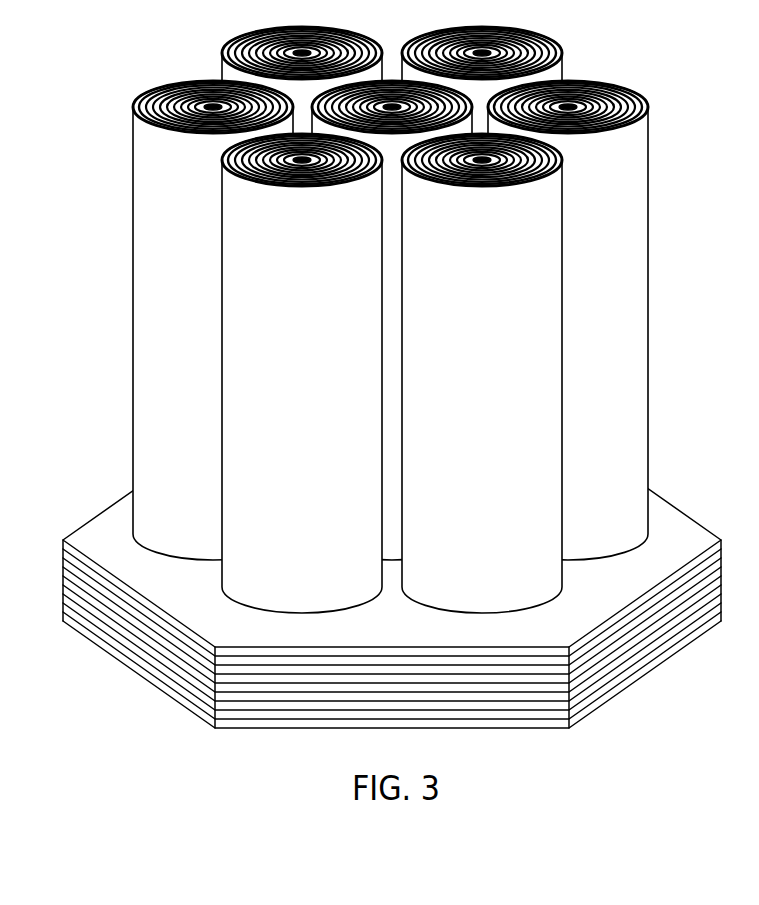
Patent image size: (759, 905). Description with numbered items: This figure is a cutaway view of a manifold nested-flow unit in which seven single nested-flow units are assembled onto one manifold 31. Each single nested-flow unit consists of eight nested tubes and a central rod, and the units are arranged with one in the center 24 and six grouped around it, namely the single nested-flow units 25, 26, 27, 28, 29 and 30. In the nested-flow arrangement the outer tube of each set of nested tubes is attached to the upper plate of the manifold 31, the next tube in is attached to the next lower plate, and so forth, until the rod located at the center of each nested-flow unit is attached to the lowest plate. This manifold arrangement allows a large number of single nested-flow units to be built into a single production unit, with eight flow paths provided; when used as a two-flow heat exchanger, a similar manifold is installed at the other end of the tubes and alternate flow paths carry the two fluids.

The center single nested-flow unit 24 is at (392, 80).
The single nested-flow unit 25 is at (565, 67).
The single nested-flow unit 26 is at (650, 157).
The single nested-flow unit 27 is at (563, 283).
The single nested-flow unit 28 is at (222, 283).
The single nested-flow unit 29 is at (135, 155).
The single nested-flow unit 30 is at (220, 68).
The manifold 31 is at (693, 525).